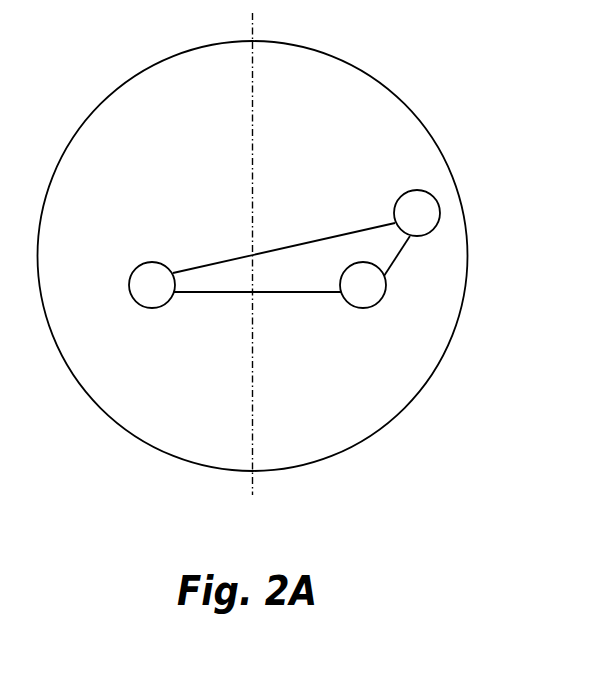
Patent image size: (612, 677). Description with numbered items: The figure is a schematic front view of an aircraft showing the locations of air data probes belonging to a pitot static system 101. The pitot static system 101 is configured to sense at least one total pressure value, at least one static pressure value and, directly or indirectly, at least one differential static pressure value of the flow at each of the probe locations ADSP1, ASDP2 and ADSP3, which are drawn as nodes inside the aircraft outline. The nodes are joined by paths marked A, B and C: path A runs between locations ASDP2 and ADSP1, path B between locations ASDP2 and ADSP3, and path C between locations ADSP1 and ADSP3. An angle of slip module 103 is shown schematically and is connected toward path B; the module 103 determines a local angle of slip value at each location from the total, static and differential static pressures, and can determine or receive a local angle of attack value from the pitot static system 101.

The pitot static system 101 is at (312, 168).
The angle of slip (AOS) module 103 is at (232, 259).
The path A is at (257, 314).
The path B is at (274, 218).
The path C is at (419, 258).
The alignment site ASDP2 is at (152, 303).
The alignment site ADSP1 is at (367, 300).
The alignment site ADSP3 is at (392, 200).